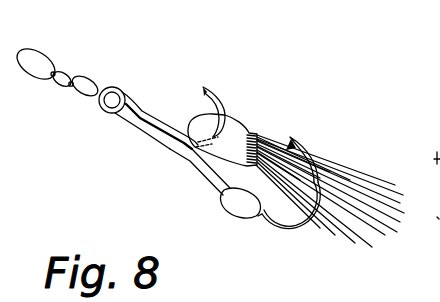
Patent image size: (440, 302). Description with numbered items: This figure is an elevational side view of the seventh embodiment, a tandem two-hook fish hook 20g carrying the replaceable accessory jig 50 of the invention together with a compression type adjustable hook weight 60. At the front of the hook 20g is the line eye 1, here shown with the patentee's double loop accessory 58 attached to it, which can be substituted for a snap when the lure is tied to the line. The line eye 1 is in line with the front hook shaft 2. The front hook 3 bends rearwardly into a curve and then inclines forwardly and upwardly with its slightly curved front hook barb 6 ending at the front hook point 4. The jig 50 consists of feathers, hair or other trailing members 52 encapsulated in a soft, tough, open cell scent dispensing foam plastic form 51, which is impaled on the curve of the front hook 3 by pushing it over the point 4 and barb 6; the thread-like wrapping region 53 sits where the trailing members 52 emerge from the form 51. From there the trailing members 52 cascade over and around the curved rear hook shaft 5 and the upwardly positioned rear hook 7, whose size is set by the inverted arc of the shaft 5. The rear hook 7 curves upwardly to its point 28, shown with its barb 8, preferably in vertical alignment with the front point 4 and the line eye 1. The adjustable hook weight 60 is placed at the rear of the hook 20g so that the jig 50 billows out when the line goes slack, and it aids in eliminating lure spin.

The interchangeable accessory jig 50 is at (309, 57).
The double loop accessory 58 is at (60, 74).
The line eye 1 is at (102, 88).
The front hook shaft 2 is at (156, 125).
The scent dispensing foam plastic form 51 is at (183, 160).
The curved rear hook shaft 5 is at (196, 178).
The front hook 3 is at (222, 112).
The thread wrapping 53 is at (247, 130).
The front hook barb 6 is at (223, 104).
The front hook point 4 is at (202, 86).
The trailing members 52 is at (374, 192).
The rear hook 7 is at (320, 168).
The hook point 8 is at (312, 150).
The rear hook point 28 is at (288, 132).
The adjustable hook weight 60 is at (235, 218).
The hook 20g is at (270, 216).